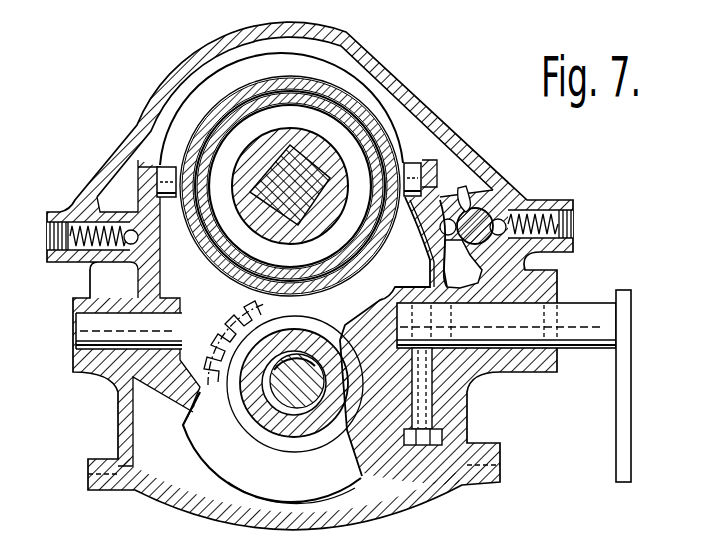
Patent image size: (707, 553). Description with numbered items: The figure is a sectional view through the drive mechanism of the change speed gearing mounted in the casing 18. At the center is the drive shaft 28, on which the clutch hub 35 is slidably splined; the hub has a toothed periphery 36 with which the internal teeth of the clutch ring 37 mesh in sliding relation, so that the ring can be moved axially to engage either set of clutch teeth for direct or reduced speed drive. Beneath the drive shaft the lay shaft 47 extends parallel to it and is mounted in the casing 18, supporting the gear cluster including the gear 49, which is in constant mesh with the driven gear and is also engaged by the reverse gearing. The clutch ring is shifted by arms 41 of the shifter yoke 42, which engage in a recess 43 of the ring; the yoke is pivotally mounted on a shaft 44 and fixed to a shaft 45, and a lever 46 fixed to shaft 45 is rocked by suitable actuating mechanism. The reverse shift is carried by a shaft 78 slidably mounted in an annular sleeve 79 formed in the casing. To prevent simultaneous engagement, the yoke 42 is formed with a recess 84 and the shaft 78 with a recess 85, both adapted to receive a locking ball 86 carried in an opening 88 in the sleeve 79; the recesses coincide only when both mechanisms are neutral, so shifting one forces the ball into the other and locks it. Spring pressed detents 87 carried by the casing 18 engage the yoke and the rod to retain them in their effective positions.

The casing 18 is at (432, 102).
The drive shaft 28 is at (278, 150).
The clutch hub 35 is at (237, 183).
The toothed periphery 36 is at (222, 110).
The clutch ring 37 is at (372, 102).
The arms 41 is at (166, 166).
The shifter yoke 42 is at (367, 458).
The recess 43 is at (388, 120).
The shaft 44 is at (172, 328).
The shaft 45 is at (581, 306).
The lever 46 is at (627, 414).
The lay shaft 47 is at (347, 337).
The gear 49 is at (215, 360).
The shaft 78 is at (487, 185).
The annular sleeve 79 is at (482, 264).
The recess 84 is at (442, 219).
The recess 85 is at (490, 213).
The locking ball 86 is at (462, 188).
The spring pressed detents 87 is at (130, 229).
The opening 88 is at (436, 256).